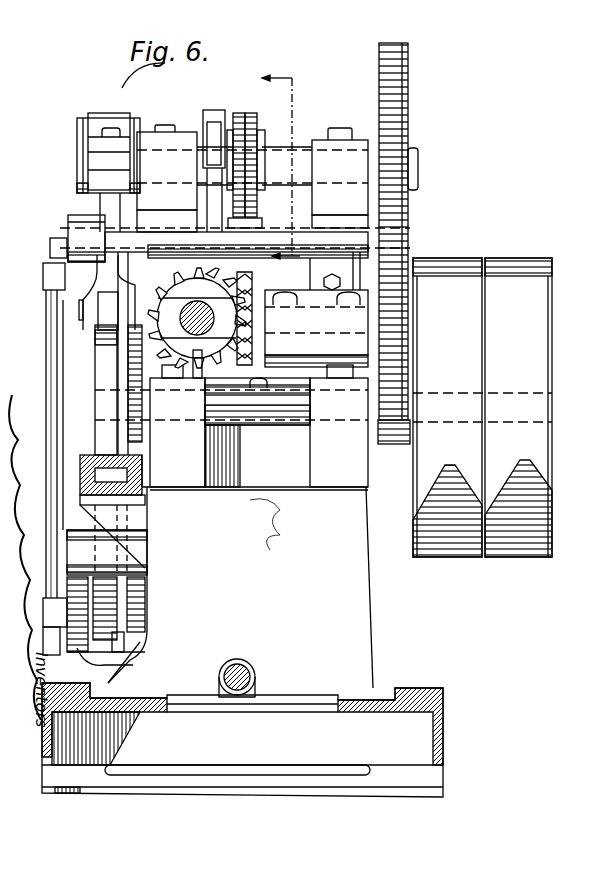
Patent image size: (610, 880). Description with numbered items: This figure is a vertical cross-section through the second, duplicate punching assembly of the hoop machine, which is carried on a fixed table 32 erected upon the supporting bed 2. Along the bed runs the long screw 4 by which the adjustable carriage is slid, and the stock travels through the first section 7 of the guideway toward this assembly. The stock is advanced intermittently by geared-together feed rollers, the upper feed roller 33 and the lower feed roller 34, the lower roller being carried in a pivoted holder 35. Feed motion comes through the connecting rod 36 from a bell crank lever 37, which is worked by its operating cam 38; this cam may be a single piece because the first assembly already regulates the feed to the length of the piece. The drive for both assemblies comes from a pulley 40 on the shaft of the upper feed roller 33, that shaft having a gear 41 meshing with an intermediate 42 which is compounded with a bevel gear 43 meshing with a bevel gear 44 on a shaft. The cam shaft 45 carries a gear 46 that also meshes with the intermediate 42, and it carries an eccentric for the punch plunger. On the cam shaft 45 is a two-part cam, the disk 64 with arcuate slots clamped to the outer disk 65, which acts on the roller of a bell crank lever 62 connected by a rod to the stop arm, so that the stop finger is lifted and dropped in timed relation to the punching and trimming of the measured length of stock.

The supporting bed 2 is at (443, 730).
The long screw 4 is at (255, 672).
The first section of the guideway 7 is at (281, 172).
The fixed table 32 is at (373, 600).
The upper feed roller 33 is at (95, 375).
The lower feed roller 34 is at (118, 608).
The pivoted holder 35 is at (119, 662).
The connecting rod 36 is at (57, 420).
The bell crank lever 37 is at (188, 200).
The operating cam 38 is at (216, 110).
The pulley 40 is at (482, 258).
The gear 41 is at (392, 444).
The intermediate gear 42 is at (408, 245).
The bevel gear 43 is at (253, 358).
The bevel gear 44 is at (218, 365).
The cam shaft 45 is at (302, 160).
The gear 46 is at (379, 48).
The bell crank lever 62 is at (250, 228).
The disk 64 is at (246, 104).
The outer disk 65 is at (252, 128).